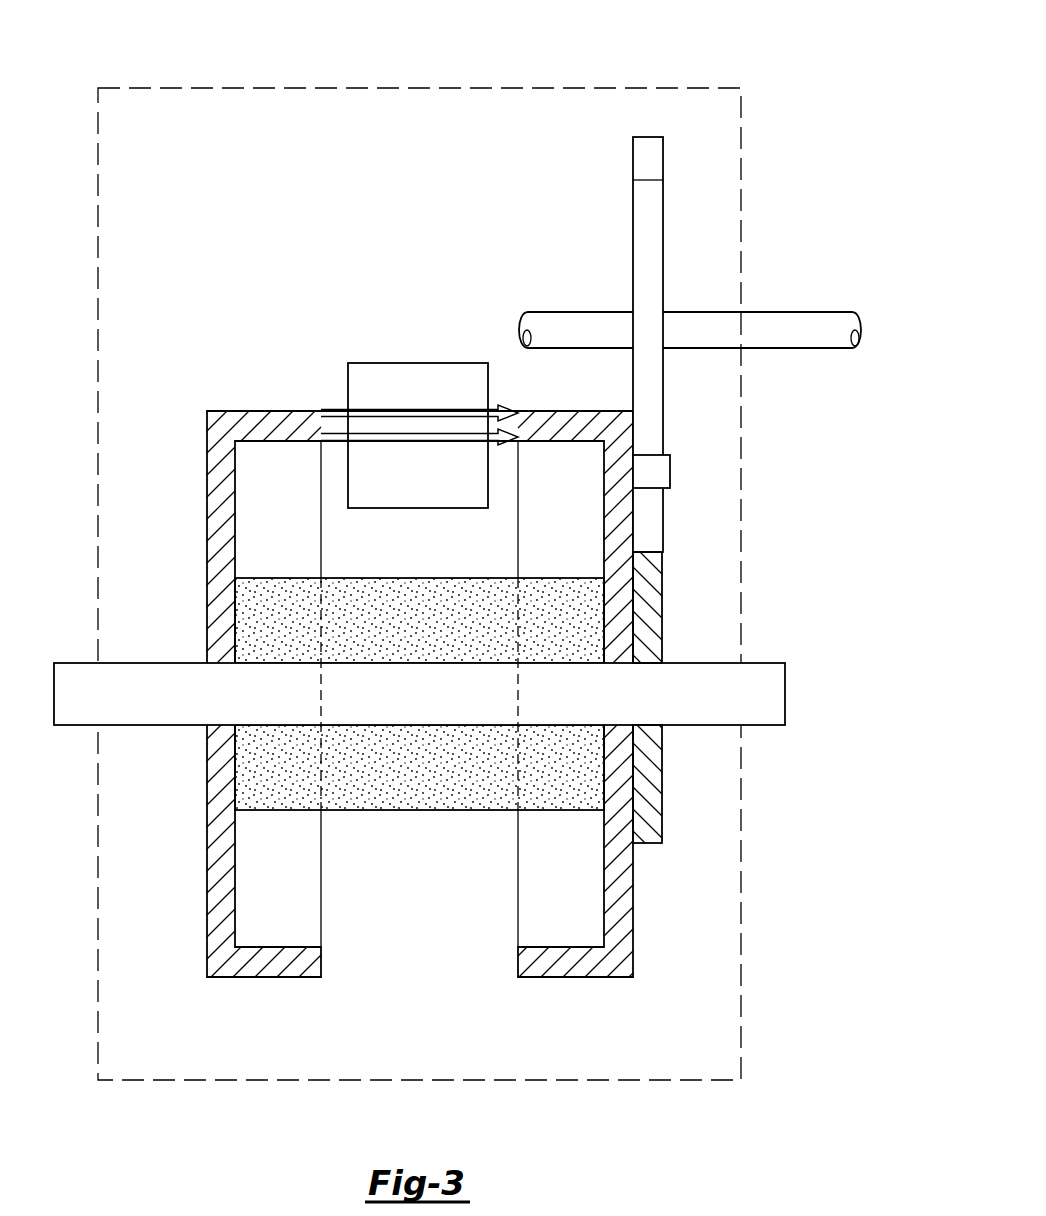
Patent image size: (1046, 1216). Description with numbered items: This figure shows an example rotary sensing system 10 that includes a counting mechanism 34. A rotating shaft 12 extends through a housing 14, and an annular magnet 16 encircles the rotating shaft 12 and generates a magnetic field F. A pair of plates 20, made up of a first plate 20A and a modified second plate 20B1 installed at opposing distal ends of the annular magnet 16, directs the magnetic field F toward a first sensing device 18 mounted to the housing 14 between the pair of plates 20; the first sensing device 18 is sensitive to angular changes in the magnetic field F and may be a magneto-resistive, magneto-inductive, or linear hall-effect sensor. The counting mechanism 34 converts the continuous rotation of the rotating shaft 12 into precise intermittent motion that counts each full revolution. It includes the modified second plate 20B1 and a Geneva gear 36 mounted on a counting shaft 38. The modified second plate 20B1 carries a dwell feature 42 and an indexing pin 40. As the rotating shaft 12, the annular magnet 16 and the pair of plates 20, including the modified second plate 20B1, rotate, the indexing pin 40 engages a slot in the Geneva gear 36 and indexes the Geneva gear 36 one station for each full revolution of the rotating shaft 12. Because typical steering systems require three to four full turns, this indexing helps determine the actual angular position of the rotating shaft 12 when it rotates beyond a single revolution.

The rotary sensing system 10 is at (616, 56).
The rotating shaft 12 is at (140, 663).
The housing 14 is at (741, 118).
The annular magnet 16 is at (418, 810).
The first sensing device 18 is at (349, 388).
The pair of plates 20 is at (237, 977).
The first plate 20A is at (206, 921).
The modified second plate 20B1 is at (633, 888).
The counting mechanism 34 is at (690, 287).
The Geneva gear 36 is at (633, 252).
The counting shaft 38 is at (811, 348).
The indexing pin 40 is at (653, 469).
The dwell feature 42 is at (662, 784).